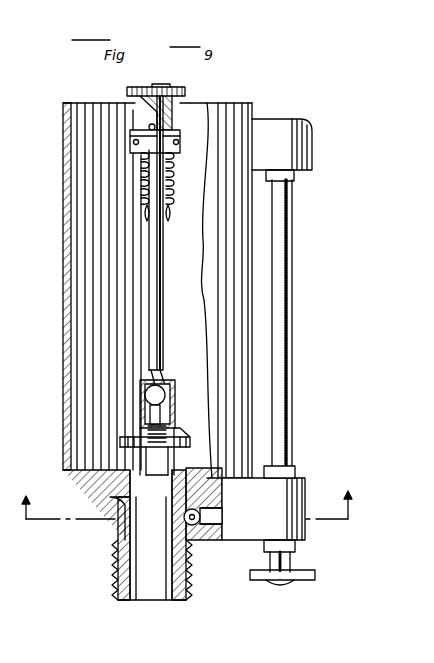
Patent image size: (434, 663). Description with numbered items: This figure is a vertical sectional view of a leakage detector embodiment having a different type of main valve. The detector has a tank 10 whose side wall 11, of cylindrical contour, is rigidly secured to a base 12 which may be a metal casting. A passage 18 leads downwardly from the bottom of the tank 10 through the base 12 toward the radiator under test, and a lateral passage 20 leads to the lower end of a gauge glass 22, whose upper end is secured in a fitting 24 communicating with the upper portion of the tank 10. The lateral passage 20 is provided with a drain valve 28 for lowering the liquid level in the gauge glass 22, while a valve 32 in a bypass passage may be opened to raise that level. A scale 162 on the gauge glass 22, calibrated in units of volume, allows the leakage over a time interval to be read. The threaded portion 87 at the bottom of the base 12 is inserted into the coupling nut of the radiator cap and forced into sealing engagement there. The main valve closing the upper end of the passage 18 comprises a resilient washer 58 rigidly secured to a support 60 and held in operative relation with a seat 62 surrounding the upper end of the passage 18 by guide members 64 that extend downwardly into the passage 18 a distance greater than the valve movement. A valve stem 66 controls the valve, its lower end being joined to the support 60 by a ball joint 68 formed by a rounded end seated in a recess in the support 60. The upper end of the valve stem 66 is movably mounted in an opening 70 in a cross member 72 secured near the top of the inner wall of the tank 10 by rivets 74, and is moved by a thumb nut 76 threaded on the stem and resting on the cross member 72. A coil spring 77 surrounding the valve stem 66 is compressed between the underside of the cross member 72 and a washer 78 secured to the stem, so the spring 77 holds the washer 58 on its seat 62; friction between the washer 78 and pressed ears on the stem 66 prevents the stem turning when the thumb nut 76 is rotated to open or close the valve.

The tank 10 is at (62, 92).
The side wall 11 is at (66, 244).
The base 12 is at (118, 530).
The passage 18 is at (128, 503).
The lateral passage 20 is at (212, 525).
The gauge glass 22 is at (290, 402).
The fitting 24 is at (305, 119).
The drain valve 28 is at (288, 582).
The valve 32 is at (196, 526).
The resilient washer 58 is at (138, 440).
The support 60 is at (142, 408).
The seat 62 is at (140, 470).
The guide members 64 is at (216, 490).
The valve stem 66 is at (152, 310).
The ball joint 68 is at (148, 390).
The opening 70 is at (152, 125).
The cross member 72 is at (130, 134).
The rivets 74 is at (133, 142).
The thumb nut 76 is at (186, 92).
The coil spring 77 is at (145, 172).
The washer 78 is at (145, 208).
The threaded portion 87 is at (114, 578).
The scale 162 is at (294, 262).